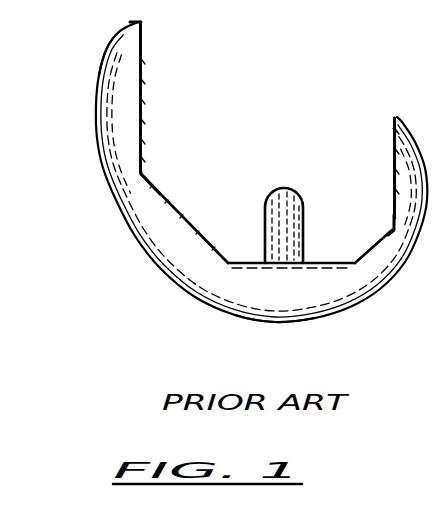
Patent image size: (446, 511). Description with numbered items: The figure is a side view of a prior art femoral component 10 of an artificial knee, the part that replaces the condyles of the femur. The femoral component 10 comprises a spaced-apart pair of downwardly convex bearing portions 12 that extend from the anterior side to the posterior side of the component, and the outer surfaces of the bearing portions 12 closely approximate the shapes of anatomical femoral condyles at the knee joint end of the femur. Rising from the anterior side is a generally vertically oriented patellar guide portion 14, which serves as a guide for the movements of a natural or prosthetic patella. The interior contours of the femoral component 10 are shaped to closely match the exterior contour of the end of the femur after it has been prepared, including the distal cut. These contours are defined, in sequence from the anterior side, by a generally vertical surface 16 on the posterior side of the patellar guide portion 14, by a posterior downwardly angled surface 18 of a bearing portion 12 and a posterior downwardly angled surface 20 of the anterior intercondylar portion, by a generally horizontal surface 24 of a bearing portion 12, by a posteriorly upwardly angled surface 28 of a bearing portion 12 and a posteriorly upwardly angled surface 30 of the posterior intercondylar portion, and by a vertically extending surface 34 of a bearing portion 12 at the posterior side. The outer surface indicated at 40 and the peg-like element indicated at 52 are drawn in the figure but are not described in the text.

The femoral component 10 is at (247, 78).
The bearing portions 12 is at (262, 321).
The patellar guide portion 14 is at (96, 128).
The generally vertical surface 16 is at (142, 107).
The posterior downwardly angled surface 18 is at (165, 201).
The posterior downwardly angled surface 20 is at (190, 224).
The generally horizontal surface 24 is at (347, 262).
The posteriorly upwardly angled surface 28 is at (378, 243).
The posteriorly upwardly angled surface 30 is at (389, 230).
The vertically extending surface 34 is at (392, 150).
The outer surface of shell 40 is at (106, 53).
The peg 52 is at (265, 197).